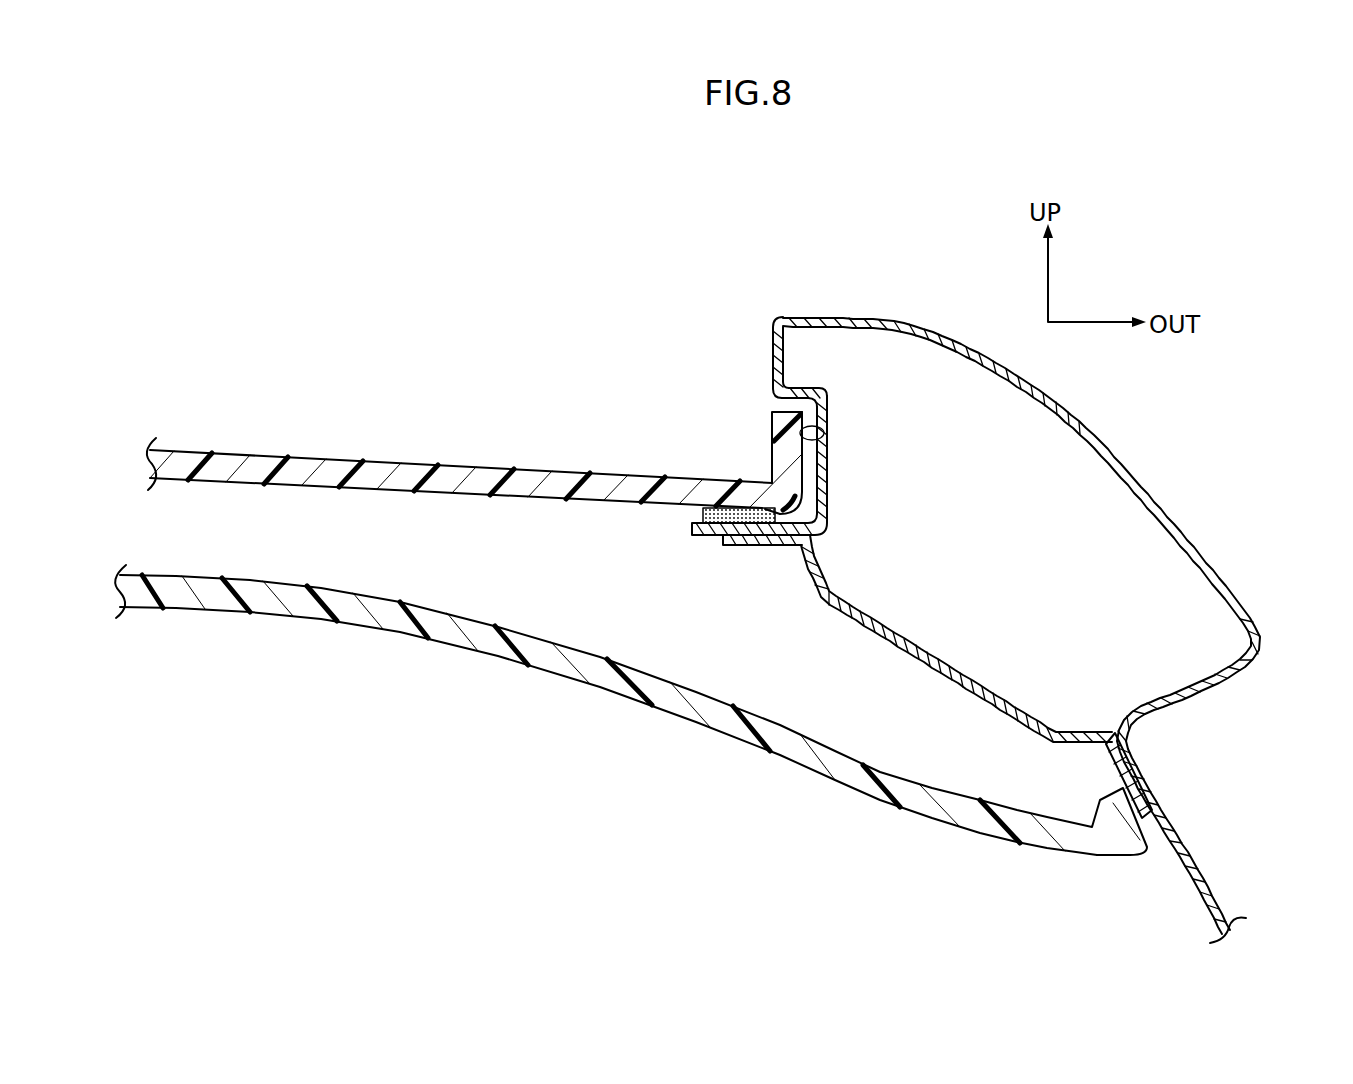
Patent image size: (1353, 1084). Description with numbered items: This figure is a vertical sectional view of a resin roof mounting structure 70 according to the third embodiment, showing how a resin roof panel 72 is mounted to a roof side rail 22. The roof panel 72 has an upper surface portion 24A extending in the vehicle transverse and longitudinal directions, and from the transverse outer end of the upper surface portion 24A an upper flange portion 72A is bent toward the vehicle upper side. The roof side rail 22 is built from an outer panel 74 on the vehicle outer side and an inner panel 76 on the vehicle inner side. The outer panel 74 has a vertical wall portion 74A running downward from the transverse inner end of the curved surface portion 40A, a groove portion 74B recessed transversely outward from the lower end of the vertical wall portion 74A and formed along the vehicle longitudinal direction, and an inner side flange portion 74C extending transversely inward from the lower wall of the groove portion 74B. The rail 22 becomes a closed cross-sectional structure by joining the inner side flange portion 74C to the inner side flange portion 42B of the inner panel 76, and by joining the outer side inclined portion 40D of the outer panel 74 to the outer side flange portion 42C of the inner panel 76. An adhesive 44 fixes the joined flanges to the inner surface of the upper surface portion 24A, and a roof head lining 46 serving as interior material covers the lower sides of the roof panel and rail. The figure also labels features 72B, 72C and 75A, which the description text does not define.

The roof side rail 22 is at (1165, 467).
The resin roof mounting structure 70 is at (808, 232).
The roof panel 72 is at (529, 450).
The upper surface portion 24A is at (377, 462).
The upper flange portion 72A is at (773, 435).
The roof panel bent portion 72B is at (783, 408).
The roof panel vertical wall 72C is at (772, 453).
The adhesive 44 is at (718, 500).
The outer panel 74 is at (1083, 421).
The vertical wall portion 74A is at (773, 345).
The groove portion 74B is at (823, 432).
The inner side flange portion 74C is at (703, 516).
The corner portion 75A is at (824, 404).
The curved surface portion 40A is at (1023, 380).
The outer side inclined portion 40D is at (1194, 856).
The inner side flange portion 42B is at (727, 547).
The outer side flange portion 42C is at (1108, 757).
The roof head lining 46 is at (743, 732).
The inner panel 76 is at (890, 652).